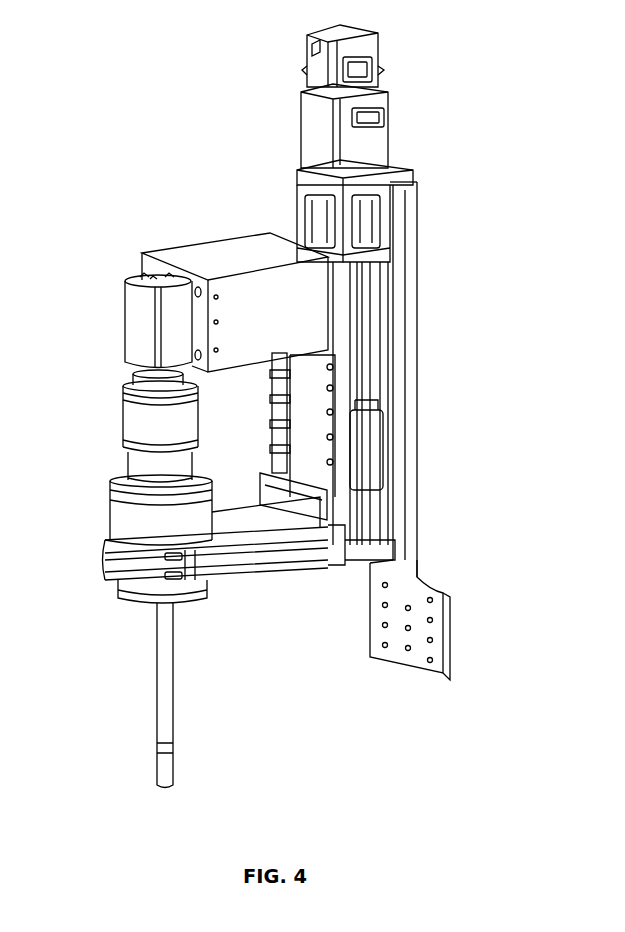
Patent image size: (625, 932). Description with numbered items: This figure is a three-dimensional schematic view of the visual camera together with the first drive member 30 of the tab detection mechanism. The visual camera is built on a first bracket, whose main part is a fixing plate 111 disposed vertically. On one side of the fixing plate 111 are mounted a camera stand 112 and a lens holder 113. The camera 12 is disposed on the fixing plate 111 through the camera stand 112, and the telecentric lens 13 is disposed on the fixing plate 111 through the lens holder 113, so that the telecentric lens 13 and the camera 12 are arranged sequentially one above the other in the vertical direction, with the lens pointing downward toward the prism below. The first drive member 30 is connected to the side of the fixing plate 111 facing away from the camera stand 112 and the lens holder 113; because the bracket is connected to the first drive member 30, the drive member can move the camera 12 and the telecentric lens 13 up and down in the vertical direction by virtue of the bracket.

The first drive member 30 is at (363, 147).
The fixing plate 111 is at (338, 500).
The camera stand 112 is at (222, 262).
The camera 12 is at (142, 333).
The telecentric lens 13 is at (142, 522).
The lens holder 113 is at (235, 530).